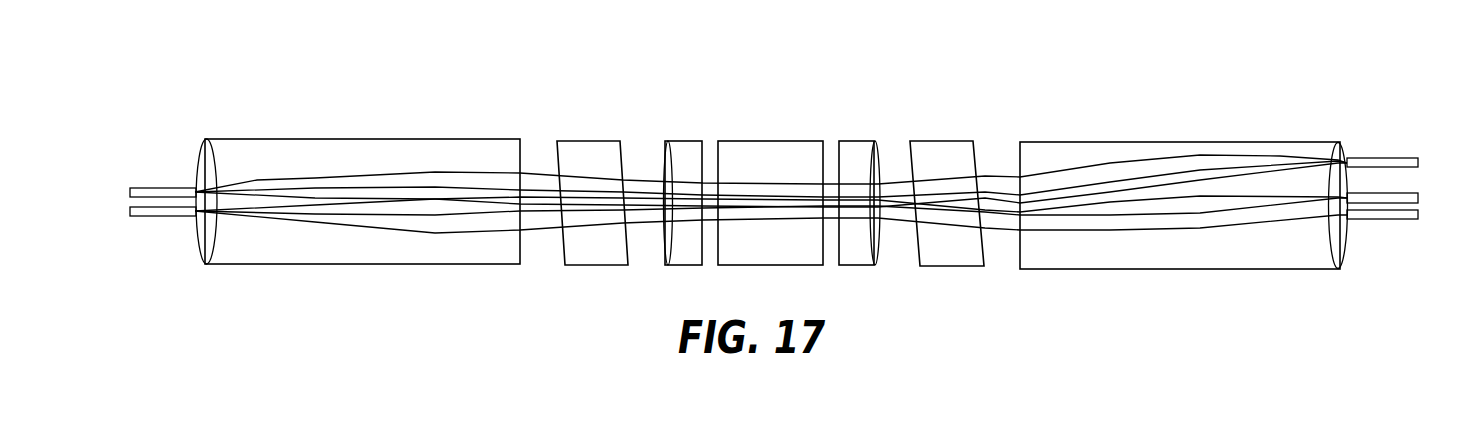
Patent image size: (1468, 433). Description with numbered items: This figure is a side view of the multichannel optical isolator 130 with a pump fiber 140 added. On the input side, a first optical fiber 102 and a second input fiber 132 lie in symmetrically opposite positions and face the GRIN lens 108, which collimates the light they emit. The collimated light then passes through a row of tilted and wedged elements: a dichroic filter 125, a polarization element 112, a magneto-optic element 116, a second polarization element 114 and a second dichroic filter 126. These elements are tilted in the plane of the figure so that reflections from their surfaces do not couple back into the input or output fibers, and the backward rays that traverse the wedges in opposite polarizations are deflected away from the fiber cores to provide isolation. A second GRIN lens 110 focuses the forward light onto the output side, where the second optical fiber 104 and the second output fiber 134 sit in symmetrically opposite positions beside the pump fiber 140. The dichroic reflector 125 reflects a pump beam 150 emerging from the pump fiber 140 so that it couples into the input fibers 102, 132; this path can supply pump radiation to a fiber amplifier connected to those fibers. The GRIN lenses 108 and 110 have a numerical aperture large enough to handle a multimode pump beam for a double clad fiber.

The first optical fiber 102 is at (143, 187).
The second input fiber 132 is at (153, 217).
The GRIN lens 108 is at (345, 139).
The dichroic filter 125 is at (582, 140).
The polarization element 112 is at (680, 140).
The magneto-optic element 116 is at (765, 140).
The polarization element 114 is at (853, 140).
The dichroic filter 126 is at (943, 140).
The multi-functional optical isolation system 130 is at (891, 57).
The GRIN lens 110 is at (1147, 142).
The pump beam 150 is at (1283, 163).
The pump fiber 140 is at (1390, 158).
The second optical fiber 104 is at (1375, 192).
The second output fiber 134 is at (1390, 220).